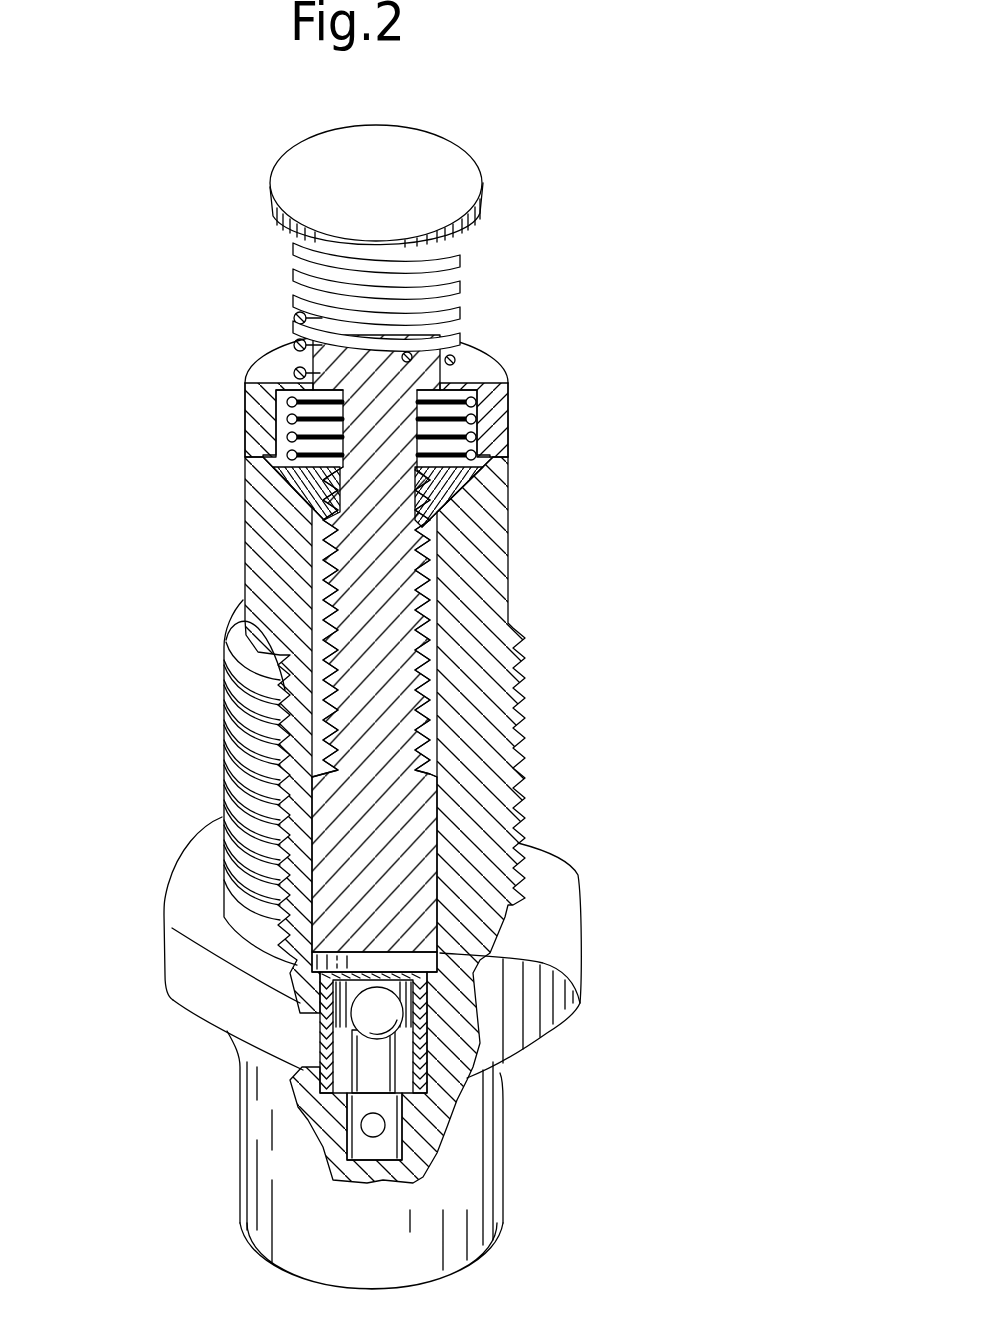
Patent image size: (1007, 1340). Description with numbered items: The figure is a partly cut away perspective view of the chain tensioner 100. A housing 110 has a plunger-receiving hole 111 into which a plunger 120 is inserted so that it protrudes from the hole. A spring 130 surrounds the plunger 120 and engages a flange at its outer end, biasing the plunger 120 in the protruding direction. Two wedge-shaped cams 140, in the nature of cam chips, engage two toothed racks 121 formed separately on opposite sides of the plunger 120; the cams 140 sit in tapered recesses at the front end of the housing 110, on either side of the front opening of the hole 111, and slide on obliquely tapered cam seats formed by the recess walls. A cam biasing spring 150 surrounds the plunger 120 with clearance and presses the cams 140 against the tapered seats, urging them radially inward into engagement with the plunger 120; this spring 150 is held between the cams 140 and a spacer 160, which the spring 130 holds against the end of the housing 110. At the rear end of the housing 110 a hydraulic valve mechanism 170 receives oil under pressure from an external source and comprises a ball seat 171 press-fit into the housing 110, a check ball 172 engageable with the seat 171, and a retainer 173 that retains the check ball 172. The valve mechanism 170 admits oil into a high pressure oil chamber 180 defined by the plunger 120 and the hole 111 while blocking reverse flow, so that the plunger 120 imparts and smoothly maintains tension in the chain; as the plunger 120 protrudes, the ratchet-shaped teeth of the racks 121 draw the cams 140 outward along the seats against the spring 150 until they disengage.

The chain tensioner 100 is at (228, 241).
The housing 110 is at (440, 813).
The plunger-receiving hole 111 is at (430, 673).
The plunger 120 is at (391, 643).
The racks 121 is at (320, 585).
The spring 130 is at (457, 275).
The wedge-shaped cams 140 is at (307, 487).
The cam biasing spring 150 is at (502, 437).
The spacer 160 is at (500, 430).
The hydraulic valve mechanism 170 is at (535, 1074).
The ball seat 171 is at (403, 1052).
The check ball 172 is at (395, 1070).
The retainer 173 is at (380, 1010).
The high pressure oil chamber 180 is at (417, 963).